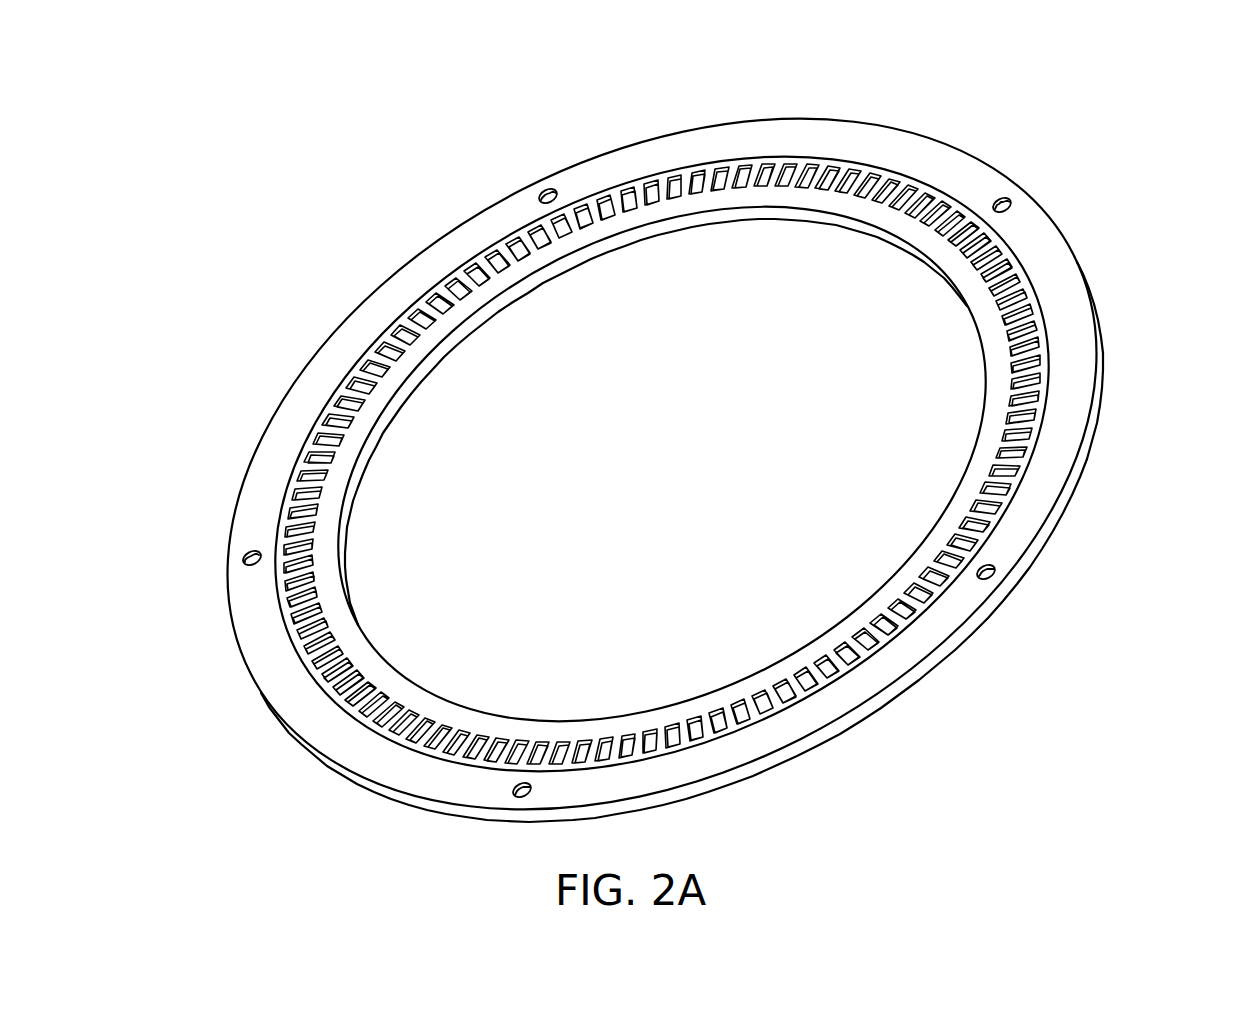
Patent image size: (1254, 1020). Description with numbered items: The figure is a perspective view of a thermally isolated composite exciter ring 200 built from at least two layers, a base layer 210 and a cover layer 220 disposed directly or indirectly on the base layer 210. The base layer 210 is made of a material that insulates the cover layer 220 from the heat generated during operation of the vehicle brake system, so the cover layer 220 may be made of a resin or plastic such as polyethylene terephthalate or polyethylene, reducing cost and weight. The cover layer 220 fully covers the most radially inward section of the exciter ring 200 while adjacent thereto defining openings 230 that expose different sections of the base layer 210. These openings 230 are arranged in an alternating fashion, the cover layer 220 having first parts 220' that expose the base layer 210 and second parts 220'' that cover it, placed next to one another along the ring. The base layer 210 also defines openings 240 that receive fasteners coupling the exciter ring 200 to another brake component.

The exciter ring 200 is at (937, 98).
The base layer 210 is at (1078, 378).
The cover layer 220 is at (662, 464).
The first parts 220' is at (431, 665).
The second parts 220'' is at (478, 684).
The openings 230 is at (857, 650).
The openings 240 is at (541, 190).